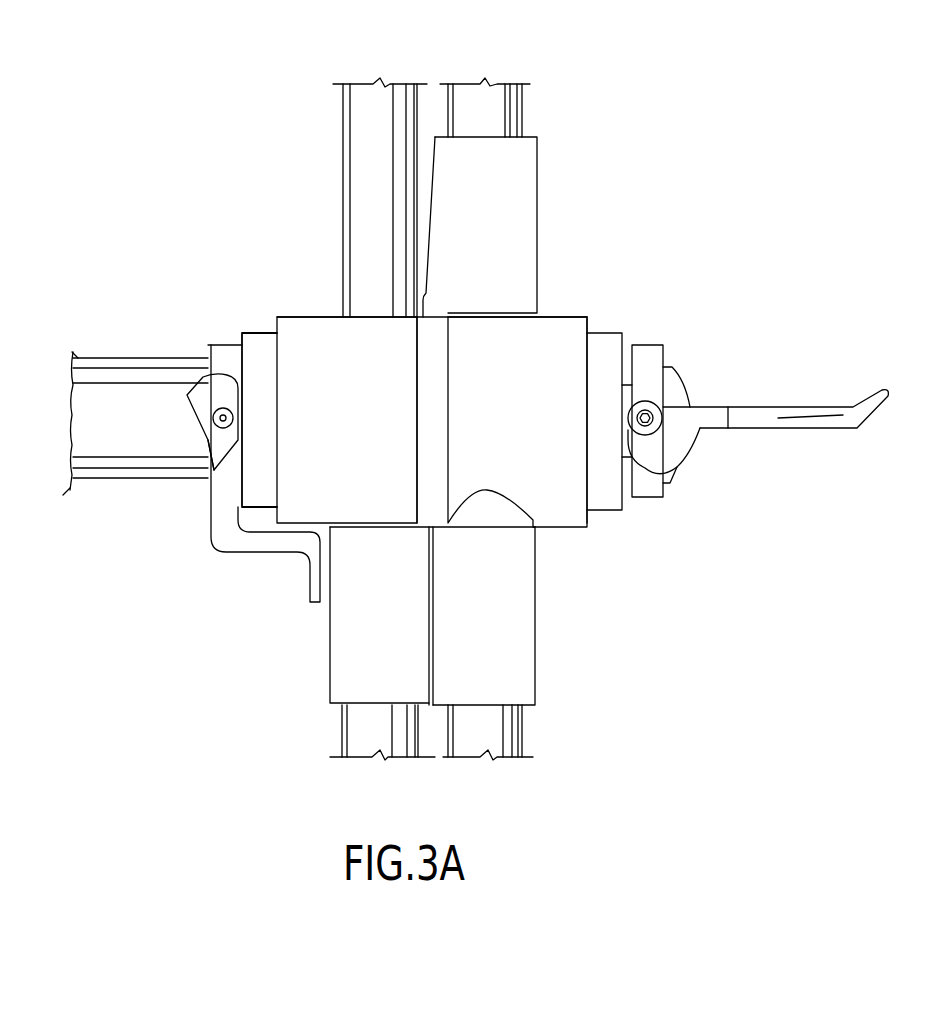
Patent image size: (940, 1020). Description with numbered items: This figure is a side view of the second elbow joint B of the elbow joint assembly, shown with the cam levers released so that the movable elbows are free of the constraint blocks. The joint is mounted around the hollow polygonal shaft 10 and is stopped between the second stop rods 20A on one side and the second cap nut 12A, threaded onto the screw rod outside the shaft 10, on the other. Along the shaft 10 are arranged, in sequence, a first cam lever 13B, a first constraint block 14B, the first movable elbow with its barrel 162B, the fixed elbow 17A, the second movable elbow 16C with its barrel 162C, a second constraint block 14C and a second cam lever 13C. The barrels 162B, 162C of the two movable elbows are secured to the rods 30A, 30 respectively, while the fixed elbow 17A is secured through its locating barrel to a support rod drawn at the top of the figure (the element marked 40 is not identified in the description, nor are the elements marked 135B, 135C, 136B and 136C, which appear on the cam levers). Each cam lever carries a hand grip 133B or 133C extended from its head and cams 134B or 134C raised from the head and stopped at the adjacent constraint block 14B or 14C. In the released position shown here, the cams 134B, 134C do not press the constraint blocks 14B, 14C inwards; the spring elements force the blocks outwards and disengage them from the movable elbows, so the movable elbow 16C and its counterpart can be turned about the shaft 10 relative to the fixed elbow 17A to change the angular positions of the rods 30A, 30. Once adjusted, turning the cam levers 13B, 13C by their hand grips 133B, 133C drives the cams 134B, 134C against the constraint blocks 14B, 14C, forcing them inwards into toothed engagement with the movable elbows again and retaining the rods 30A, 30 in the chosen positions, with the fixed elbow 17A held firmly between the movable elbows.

The second elbow joint B is at (583, 232).
The shaft 10 is at (157, 420).
The second cap nut 12A is at (683, 387).
The first cam lever 13B is at (207, 330).
The second cam lever 13C is at (680, 333).
The first constraint block 14B is at (262, 363).
The second constraint block 14C is at (602, 360).
The second movable elbow 16C is at (567, 492).
The fixed elbow 17A is at (430, 467).
The second stop rods 20A is at (105, 367).
The rod 30 is at (495, 735).
The rod 30A is at (373, 718).
The upper housing 40 is at (480, 112).
The hand grip 133B is at (270, 540).
The hand grip 133C is at (813, 405).
The cams 134B is at (207, 388).
The cams 134C is at (657, 420).
The left lever 135B is at (312, 588).
The right lever 135C is at (843, 415).
The left pivot 136B is at (213, 463).
The right pivot 136C is at (650, 457).
The barrel 162B is at (395, 675).
The barrel 162C is at (510, 665).